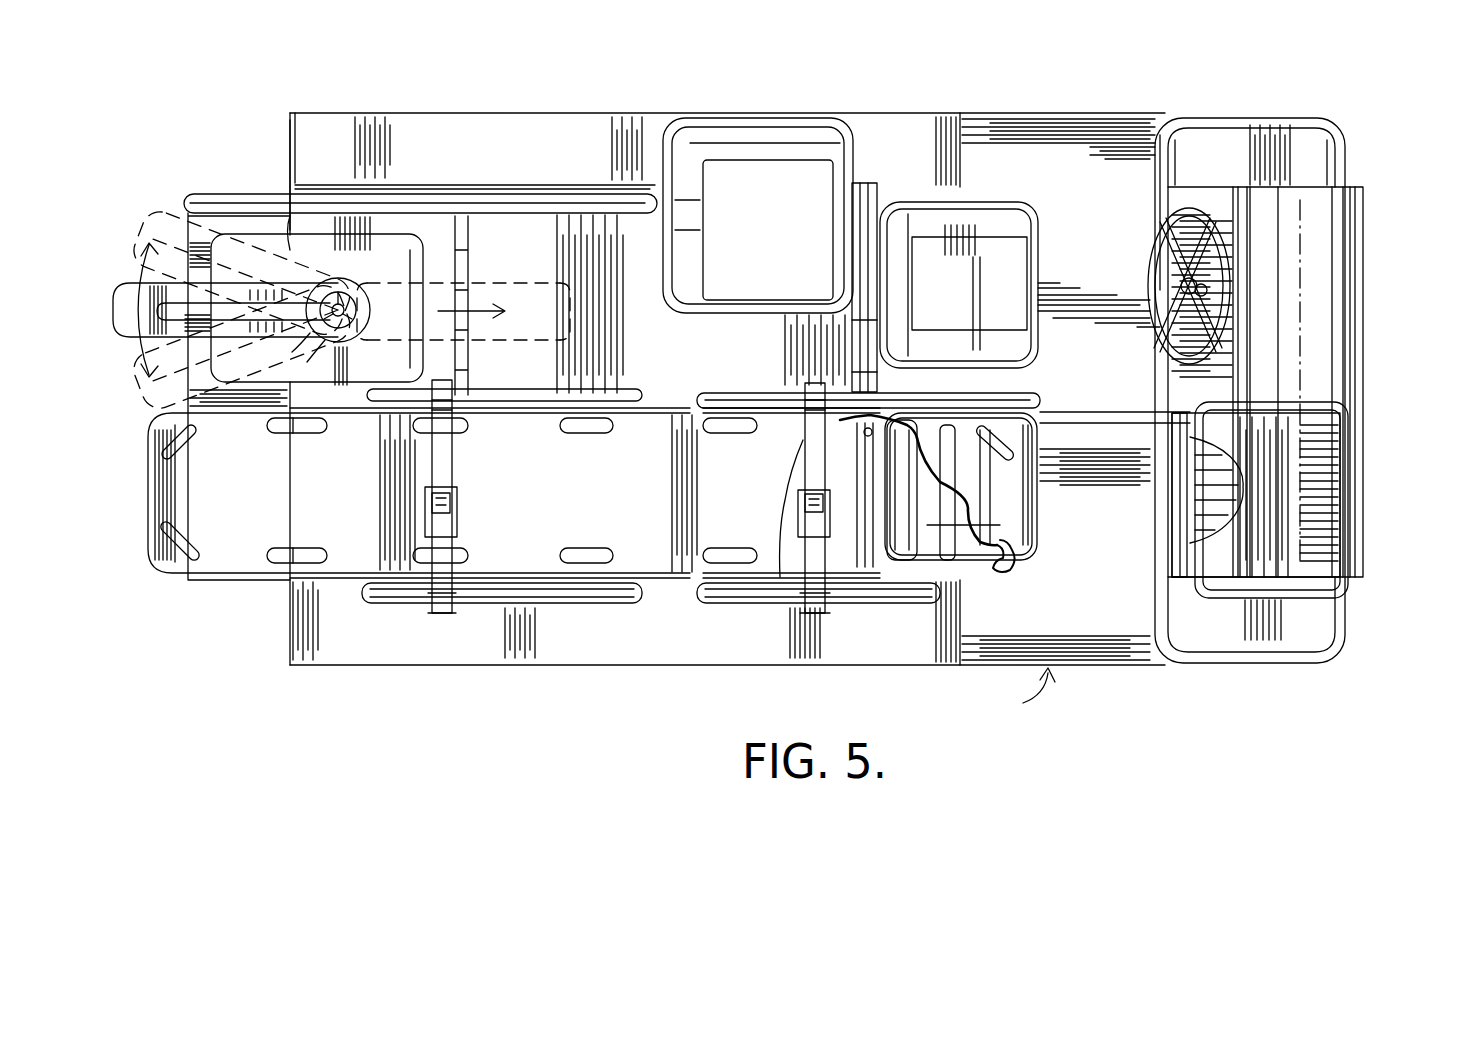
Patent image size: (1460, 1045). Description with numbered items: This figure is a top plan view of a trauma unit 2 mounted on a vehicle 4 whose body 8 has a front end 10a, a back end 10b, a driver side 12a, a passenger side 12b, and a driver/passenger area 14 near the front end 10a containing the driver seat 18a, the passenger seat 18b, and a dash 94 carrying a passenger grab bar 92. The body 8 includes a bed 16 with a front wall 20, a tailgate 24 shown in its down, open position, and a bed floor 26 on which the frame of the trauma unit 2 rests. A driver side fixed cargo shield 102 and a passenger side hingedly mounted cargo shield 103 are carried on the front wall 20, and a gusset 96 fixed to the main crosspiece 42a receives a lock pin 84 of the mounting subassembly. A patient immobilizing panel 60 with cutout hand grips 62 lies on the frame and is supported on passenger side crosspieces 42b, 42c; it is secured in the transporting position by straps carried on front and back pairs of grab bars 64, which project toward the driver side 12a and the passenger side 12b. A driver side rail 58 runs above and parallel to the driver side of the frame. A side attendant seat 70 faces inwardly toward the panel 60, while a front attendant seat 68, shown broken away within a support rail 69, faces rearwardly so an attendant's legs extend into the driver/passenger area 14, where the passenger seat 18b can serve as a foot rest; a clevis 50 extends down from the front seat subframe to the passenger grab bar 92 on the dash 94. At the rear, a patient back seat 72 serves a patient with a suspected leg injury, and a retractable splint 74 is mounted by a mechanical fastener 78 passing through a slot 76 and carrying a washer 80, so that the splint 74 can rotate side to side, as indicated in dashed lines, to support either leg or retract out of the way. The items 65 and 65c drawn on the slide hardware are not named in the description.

The trauma unit 2 is at (1353, 118).
The vehicle 4 is at (1031, 692).
The body 8 is at (495, 170).
The front end 10a is at (1366, 265).
The back end 10b is at (287, 152).
The driver side 12a is at (517, 113).
The passenger side 12b is at (560, 665).
The driver/passenger area 14 is at (1098, 251).
The bed 16 is at (291, 216).
The driver seat 18a is at (1013, 281).
The passenger seat 18b is at (1037, 542).
The front wall 20 is at (850, 323).
The tailgate 24 is at (197, 192).
The bed floor 26 is at (667, 356).
The main crosspiece 42a is at (824, 512).
The passenger side crosspiece 42b is at (1003, 572).
The passenger side crosspiece 42c is at (957, 492).
The clevis 50 is at (1167, 503).
The driver side rail 58 is at (485, 220).
The patient immobilizing panel 60 is at (583, 499).
The cutout hand grips 62 is at (608, 556).
The grab bars 64 is at (477, 603).
The slide bar 65 is at (452, 453).
The slide block 65c is at (457, 508).
The front attendant seat 68 is at (1243, 454).
The support rail 69 is at (1350, 403).
The side attendant seat 70 is at (762, 279).
The patient back seat 72 is at (360, 269).
The retractable splint 74 is at (135, 350).
The slot 76 is at (225, 310).
The mechanical fastener 78 is at (333, 327).
The washer 80 is at (358, 310).
The lock pin 84 is at (850, 372).
The passenger grab bar 92 is at (1190, 545).
The dash 94 is at (1312, 311).
The gusset 96 is at (868, 418).
The driver side fixed cargo shield 102 is at (892, 202).
The passenger side hingedly mounted cargo shield 103 is at (893, 577).